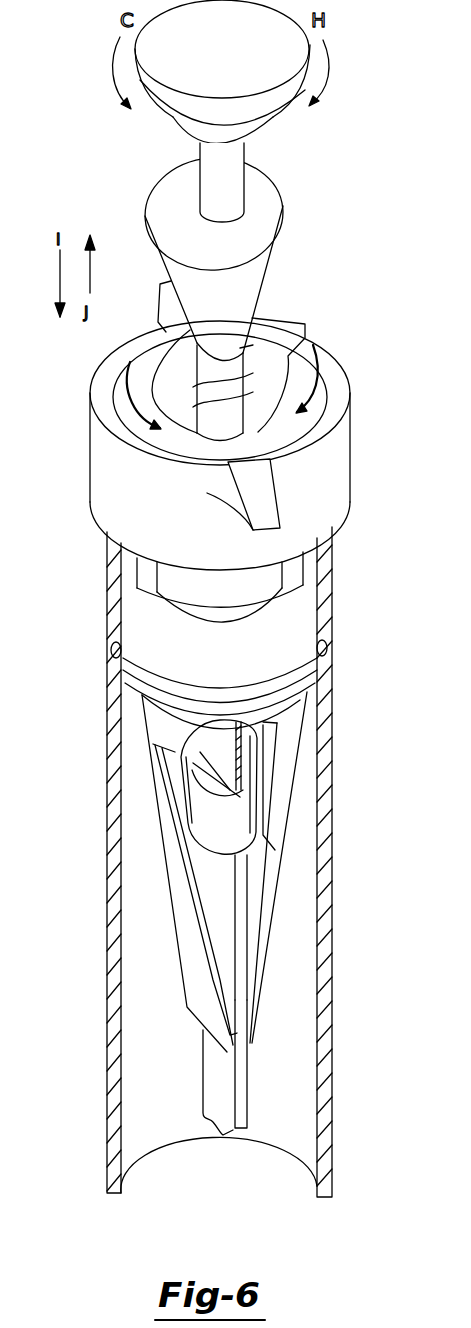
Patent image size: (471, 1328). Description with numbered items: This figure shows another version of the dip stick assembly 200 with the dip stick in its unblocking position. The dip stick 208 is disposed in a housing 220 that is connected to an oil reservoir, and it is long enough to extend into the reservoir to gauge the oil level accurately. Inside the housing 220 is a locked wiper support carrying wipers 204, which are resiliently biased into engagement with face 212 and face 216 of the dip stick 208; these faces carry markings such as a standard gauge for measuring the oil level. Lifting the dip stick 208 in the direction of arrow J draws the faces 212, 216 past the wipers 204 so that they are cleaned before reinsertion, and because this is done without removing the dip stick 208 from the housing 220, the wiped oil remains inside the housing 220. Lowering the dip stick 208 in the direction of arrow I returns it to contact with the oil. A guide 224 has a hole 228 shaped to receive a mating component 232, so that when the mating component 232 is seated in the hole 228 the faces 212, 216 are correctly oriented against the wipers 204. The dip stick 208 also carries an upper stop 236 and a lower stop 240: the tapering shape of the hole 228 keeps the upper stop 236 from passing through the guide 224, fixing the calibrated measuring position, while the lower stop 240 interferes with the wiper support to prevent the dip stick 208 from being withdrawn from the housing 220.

The dip stick assembly 200 is at (398, 648).
The wipers 204 is at (187, 950).
The dip stick 208 is at (243, 1087).
The face 212 is at (250, 907).
The face 216 is at (222, 872).
The housing 220 is at (330, 752).
The guide 224 is at (108, 403).
The hole 228 is at (263, 381).
The mating component 232 is at (170, 207).
The upper stop 236 is at (268, 273).
The lower stop 240 is at (208, 790).